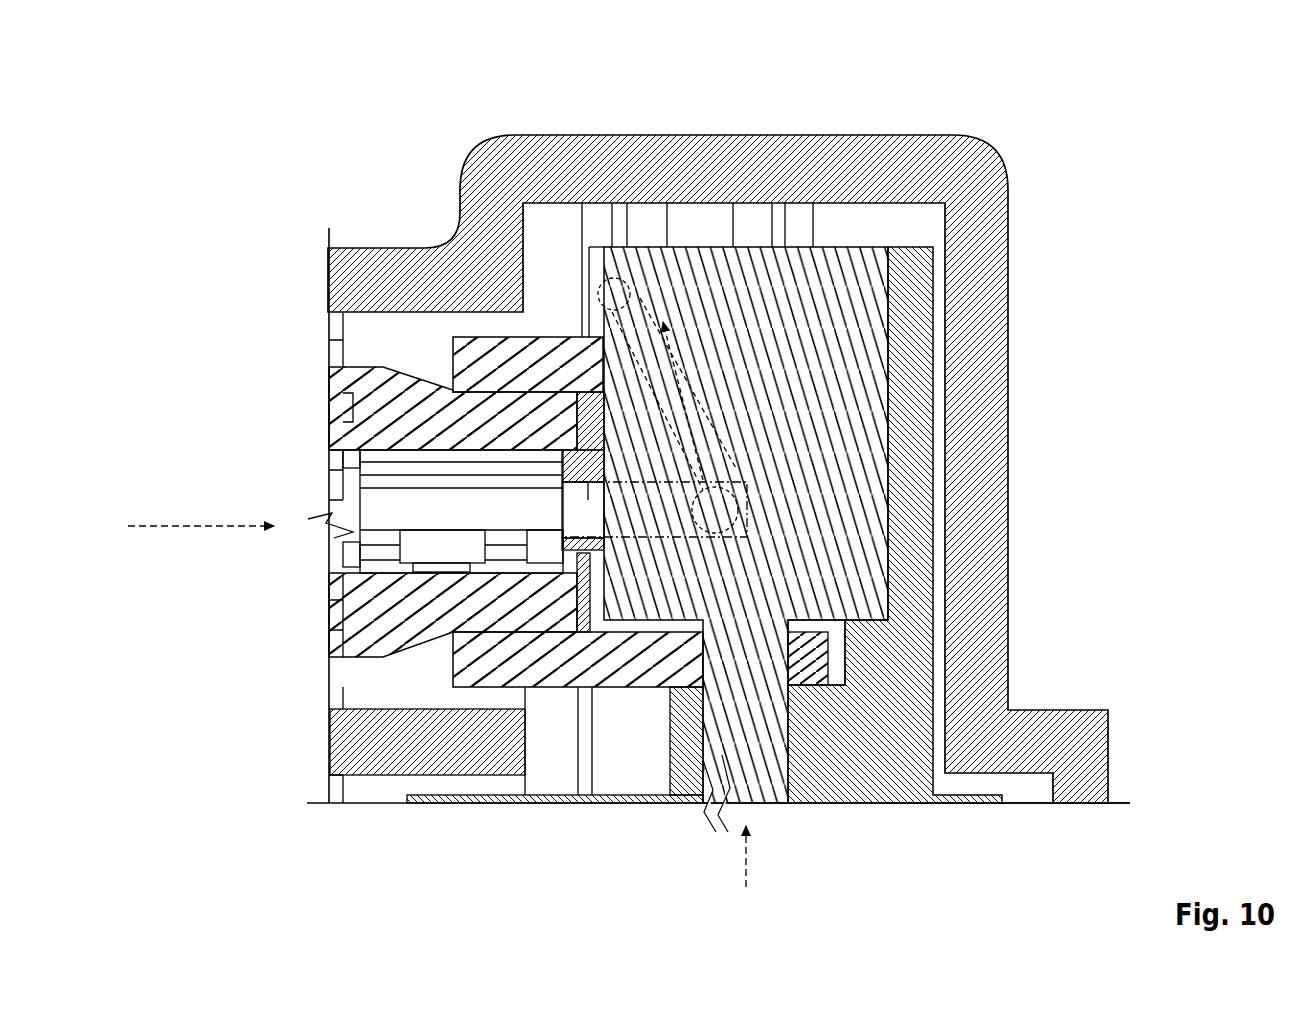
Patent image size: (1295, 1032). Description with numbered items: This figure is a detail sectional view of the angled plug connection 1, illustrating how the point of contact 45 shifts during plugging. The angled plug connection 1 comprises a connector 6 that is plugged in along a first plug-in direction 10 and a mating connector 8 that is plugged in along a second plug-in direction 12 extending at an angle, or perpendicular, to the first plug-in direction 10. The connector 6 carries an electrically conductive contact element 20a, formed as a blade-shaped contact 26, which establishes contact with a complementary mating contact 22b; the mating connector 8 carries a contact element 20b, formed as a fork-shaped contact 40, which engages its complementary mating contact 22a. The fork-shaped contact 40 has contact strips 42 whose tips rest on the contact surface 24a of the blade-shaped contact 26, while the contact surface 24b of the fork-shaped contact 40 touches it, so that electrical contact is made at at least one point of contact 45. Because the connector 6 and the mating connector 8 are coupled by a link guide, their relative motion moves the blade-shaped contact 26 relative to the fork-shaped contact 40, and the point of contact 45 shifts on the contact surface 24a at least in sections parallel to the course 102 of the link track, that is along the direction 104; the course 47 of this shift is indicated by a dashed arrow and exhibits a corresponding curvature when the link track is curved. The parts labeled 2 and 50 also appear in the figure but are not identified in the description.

The angled plug connection 1 is at (1058, 55).
The housing part 2 is at (697, 557).
The connector 6 is at (912, 812).
The mating connector 8 is at (312, 343).
The first plug-in direction 10 is at (746, 855).
The second plug-in direction 12 is at (198, 526).
The contact element 20a is at (746, 587).
The contact element 20b is at (516, 373).
The mating contact 22a is at (746, 587).
The mating contact 22b is at (516, 373).
The contact surface 24a is at (862, 460).
The contact surface 24b is at (587, 527).
The blade-shaped contact 26 is at (725, 783).
The fork-shaped contact 40 is at (516, 373).
The contact strip 42 is at (585, 488).
The point of contact 45 is at (618, 280).
The course of the shift 47 is at (672, 377).
The housing 50 is at (1001, 113).
The course of the link track 102 is at (726, 372).
The direction of the link guide 104 is at (708, 425).